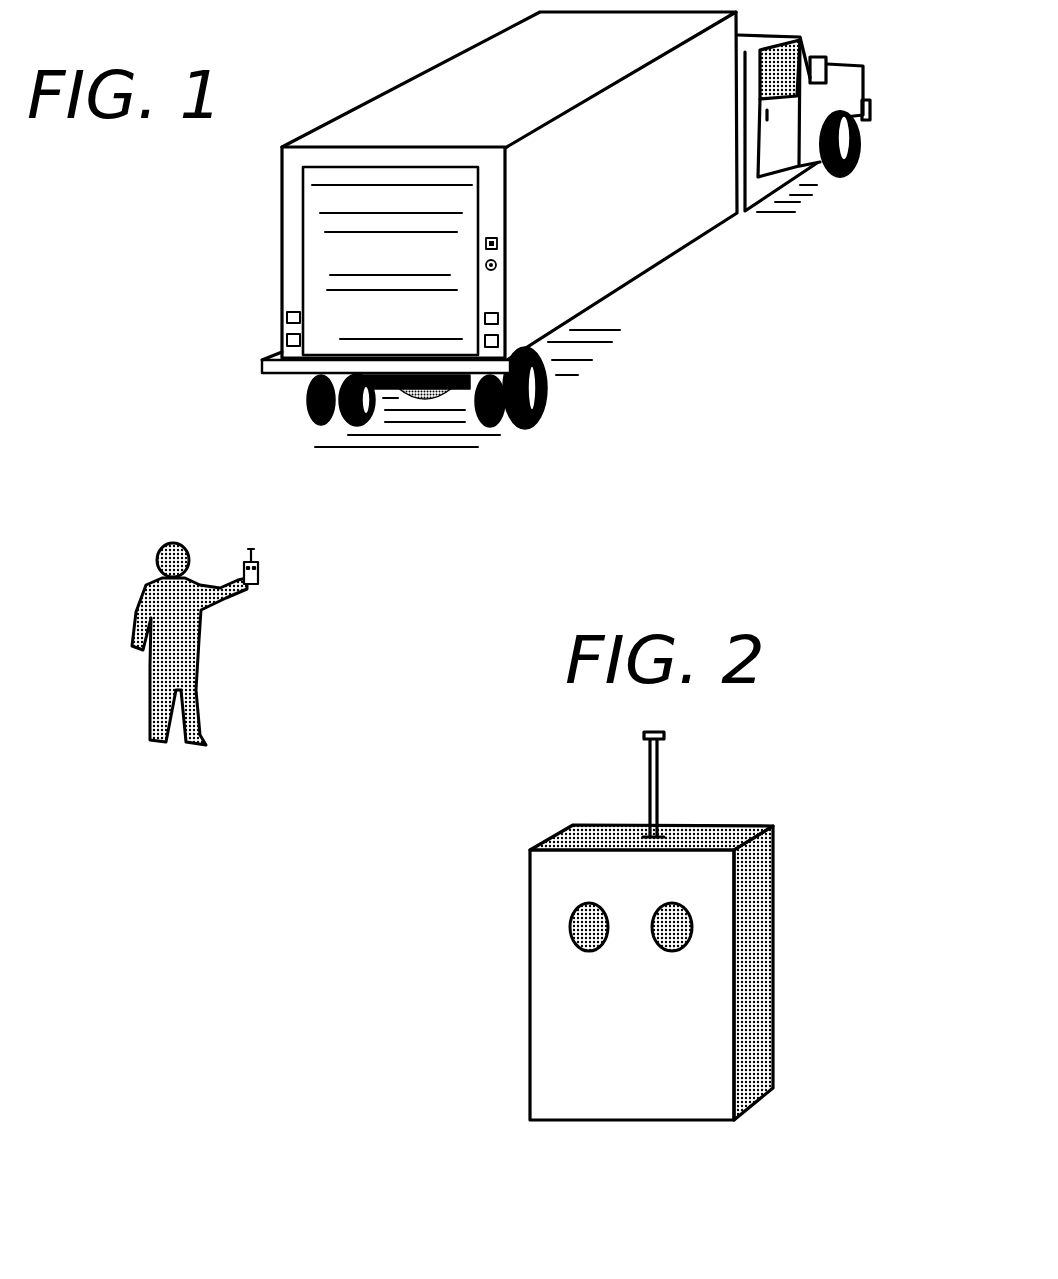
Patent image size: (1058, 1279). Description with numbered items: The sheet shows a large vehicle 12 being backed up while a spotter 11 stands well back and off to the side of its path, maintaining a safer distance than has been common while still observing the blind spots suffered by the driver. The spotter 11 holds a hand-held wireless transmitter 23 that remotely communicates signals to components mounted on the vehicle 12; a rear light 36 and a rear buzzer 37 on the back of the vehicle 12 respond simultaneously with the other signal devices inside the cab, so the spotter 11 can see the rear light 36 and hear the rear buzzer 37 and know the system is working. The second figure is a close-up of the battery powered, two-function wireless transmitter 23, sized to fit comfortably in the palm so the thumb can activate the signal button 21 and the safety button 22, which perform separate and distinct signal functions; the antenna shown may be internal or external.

In FIG. 1, the spotter 11 is at (205, 637).
In FIG. 1, the vehicle 12 is at (294, 253).
In FIG. 2, the signal button 21 is at (565, 950).
In FIG. 2, the safety button 22 is at (655, 960).
In FIG. 1, the wireless transmitter 23 is at (263, 571).
In FIG. 2, the wireless transmitter 23 is at (748, 983).
In FIG. 1, the rear light 36 is at (512, 272).
In FIG. 1, the rear buzzer 37 is at (511, 243).